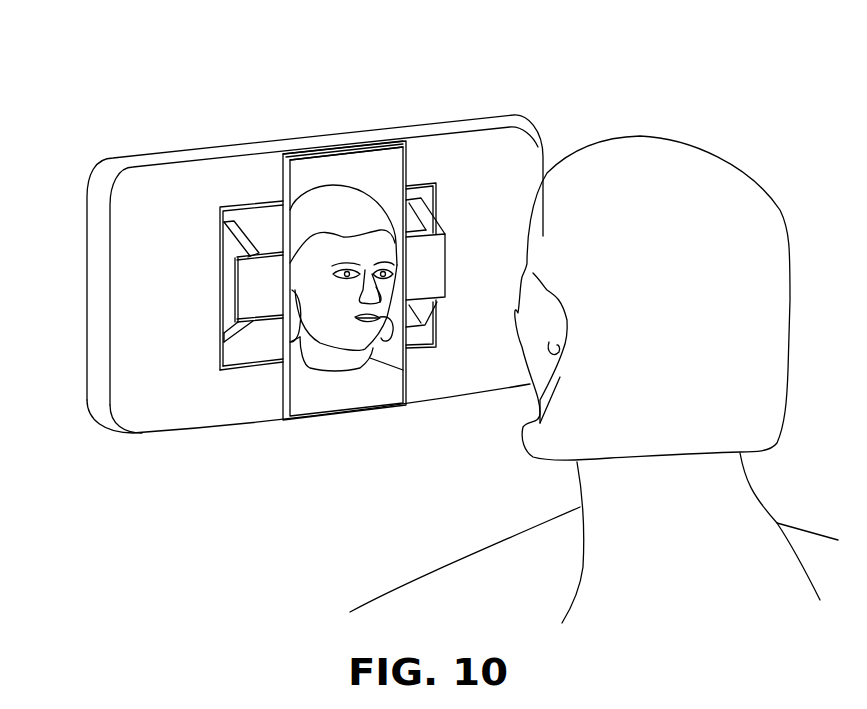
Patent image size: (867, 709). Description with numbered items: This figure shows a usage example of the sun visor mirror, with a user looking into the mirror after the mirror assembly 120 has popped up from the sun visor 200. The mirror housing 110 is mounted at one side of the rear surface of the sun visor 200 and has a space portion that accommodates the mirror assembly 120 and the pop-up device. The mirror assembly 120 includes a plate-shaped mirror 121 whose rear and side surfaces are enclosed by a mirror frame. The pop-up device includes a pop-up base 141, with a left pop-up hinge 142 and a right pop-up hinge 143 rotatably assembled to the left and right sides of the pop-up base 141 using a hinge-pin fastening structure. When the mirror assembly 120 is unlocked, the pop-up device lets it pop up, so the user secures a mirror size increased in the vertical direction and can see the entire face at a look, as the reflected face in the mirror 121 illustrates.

The mirror housing 110 is at (260, 220).
The mirror assembly 120 is at (343, 232).
The mirror 121 is at (388, 158).
The pop-up base 141 is at (266, 307).
The left pop-up hinge 142 is at (228, 240).
The right pop-up hinge 143 is at (421, 306).
The sun visor 200 is at (413, 127).